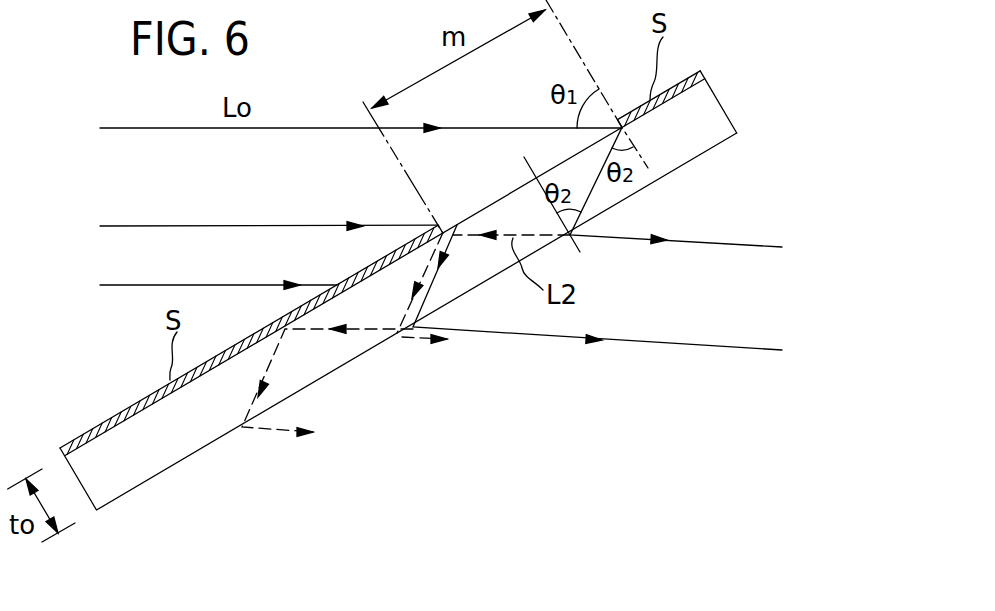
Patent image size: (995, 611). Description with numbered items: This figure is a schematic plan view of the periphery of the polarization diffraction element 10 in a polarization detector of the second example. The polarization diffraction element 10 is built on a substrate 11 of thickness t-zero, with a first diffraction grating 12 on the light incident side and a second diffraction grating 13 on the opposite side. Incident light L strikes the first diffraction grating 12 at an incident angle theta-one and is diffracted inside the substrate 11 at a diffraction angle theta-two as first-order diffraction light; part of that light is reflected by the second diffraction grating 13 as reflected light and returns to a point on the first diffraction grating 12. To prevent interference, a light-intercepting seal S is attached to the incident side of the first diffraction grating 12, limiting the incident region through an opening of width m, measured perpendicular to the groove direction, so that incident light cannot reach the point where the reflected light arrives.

The polarization diffraction element 10 is at (445, 282).
The substrate 11 is at (110, 477).
The first diffraction grating 12 is at (714, 76).
The second diffraction grating 13 is at (712, 153).